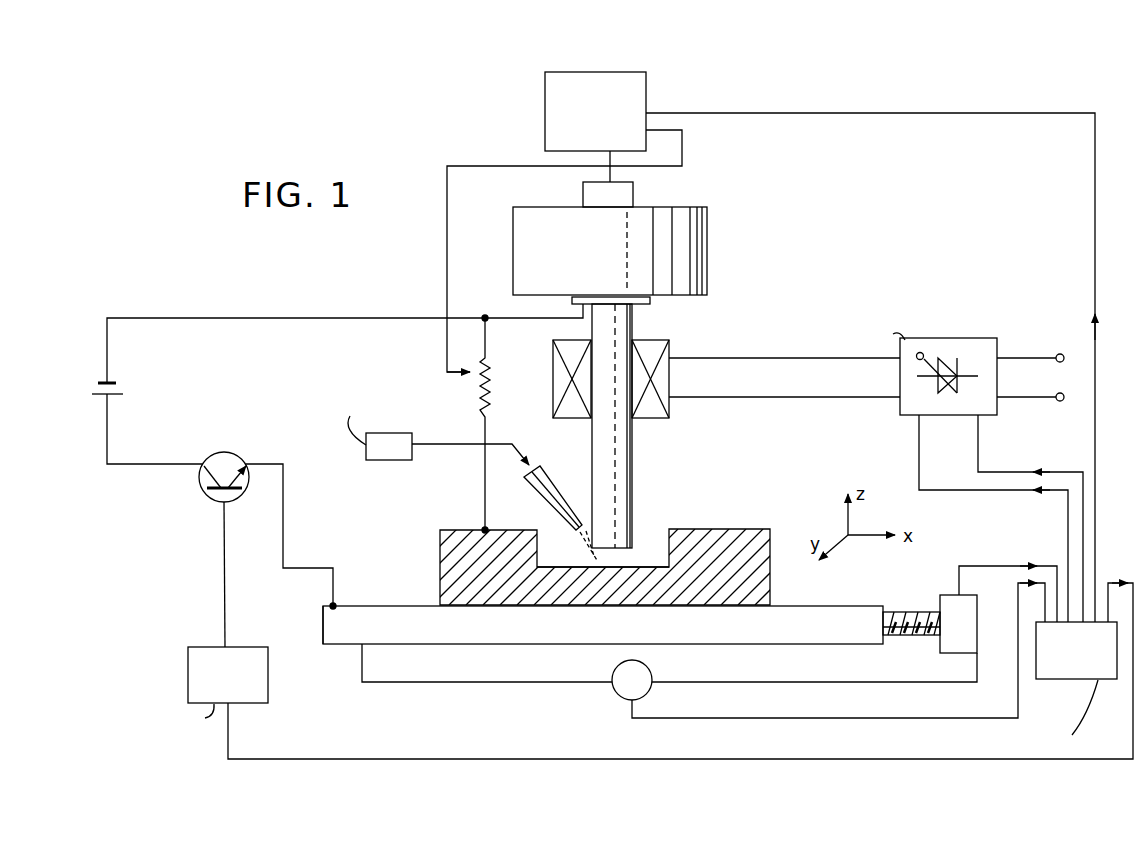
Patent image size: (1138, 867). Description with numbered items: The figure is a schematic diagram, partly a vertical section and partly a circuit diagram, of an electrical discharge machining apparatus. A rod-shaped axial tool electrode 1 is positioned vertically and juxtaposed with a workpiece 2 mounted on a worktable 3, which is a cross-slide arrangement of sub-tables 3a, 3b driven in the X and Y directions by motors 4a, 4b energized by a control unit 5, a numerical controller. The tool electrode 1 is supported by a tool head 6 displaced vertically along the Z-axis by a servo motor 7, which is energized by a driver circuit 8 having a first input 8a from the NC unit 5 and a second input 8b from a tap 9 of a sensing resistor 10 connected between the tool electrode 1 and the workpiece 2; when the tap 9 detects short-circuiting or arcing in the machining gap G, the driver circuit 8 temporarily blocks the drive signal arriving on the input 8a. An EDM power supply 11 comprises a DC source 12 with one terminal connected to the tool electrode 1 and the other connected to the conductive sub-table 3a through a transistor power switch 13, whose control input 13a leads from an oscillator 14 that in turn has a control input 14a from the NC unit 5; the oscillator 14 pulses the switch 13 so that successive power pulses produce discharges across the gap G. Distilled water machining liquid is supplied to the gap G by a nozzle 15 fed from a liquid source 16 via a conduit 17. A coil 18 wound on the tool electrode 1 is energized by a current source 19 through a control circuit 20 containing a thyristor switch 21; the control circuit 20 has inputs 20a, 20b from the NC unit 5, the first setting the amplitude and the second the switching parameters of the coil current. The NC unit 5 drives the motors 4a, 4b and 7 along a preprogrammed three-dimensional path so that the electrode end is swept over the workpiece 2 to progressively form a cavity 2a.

The tool electrode 1 is at (640, 456).
The workpiece 2 is at (770, 542).
The cavity 2a is at (669, 542).
The worktable 3 is at (848, 605).
The sub-table 3a is at (333, 649).
The sub-table 3b is at (414, 683).
The motor 4a is at (945, 655).
The motor 4b is at (652, 690).
The control unit 5 is at (1058, 680).
The tool head 6 is at (700, 262).
The servo motor 7 is at (636, 196).
The driver circuit 8 is at (545, 118).
The first input 8a is at (745, 113).
The second input 8b is at (684, 149).
The tap 9 is at (452, 374).
The sensing resistor 10 is at (500, 402).
The EDM power supply 11 is at (243, 384).
The DC source 12 is at (120, 388).
The power switch 13 is at (225, 452).
The control input 13a is at (224, 545).
The oscillator 14 is at (200, 646).
The control input 14a is at (230, 742).
The nozzle 15 is at (565, 496).
The liquid source 16 is at (378, 463).
The conduit 17 is at (448, 446).
The coil 18 is at (690, 418).
The current source 19 is at (1062, 378).
The control circuit 20 is at (992, 338).
The first input 20a is at (978, 449).
The second input 20b is at (918, 449).
The switch 21 is at (946, 366).
The machining gap G is at (598, 560).